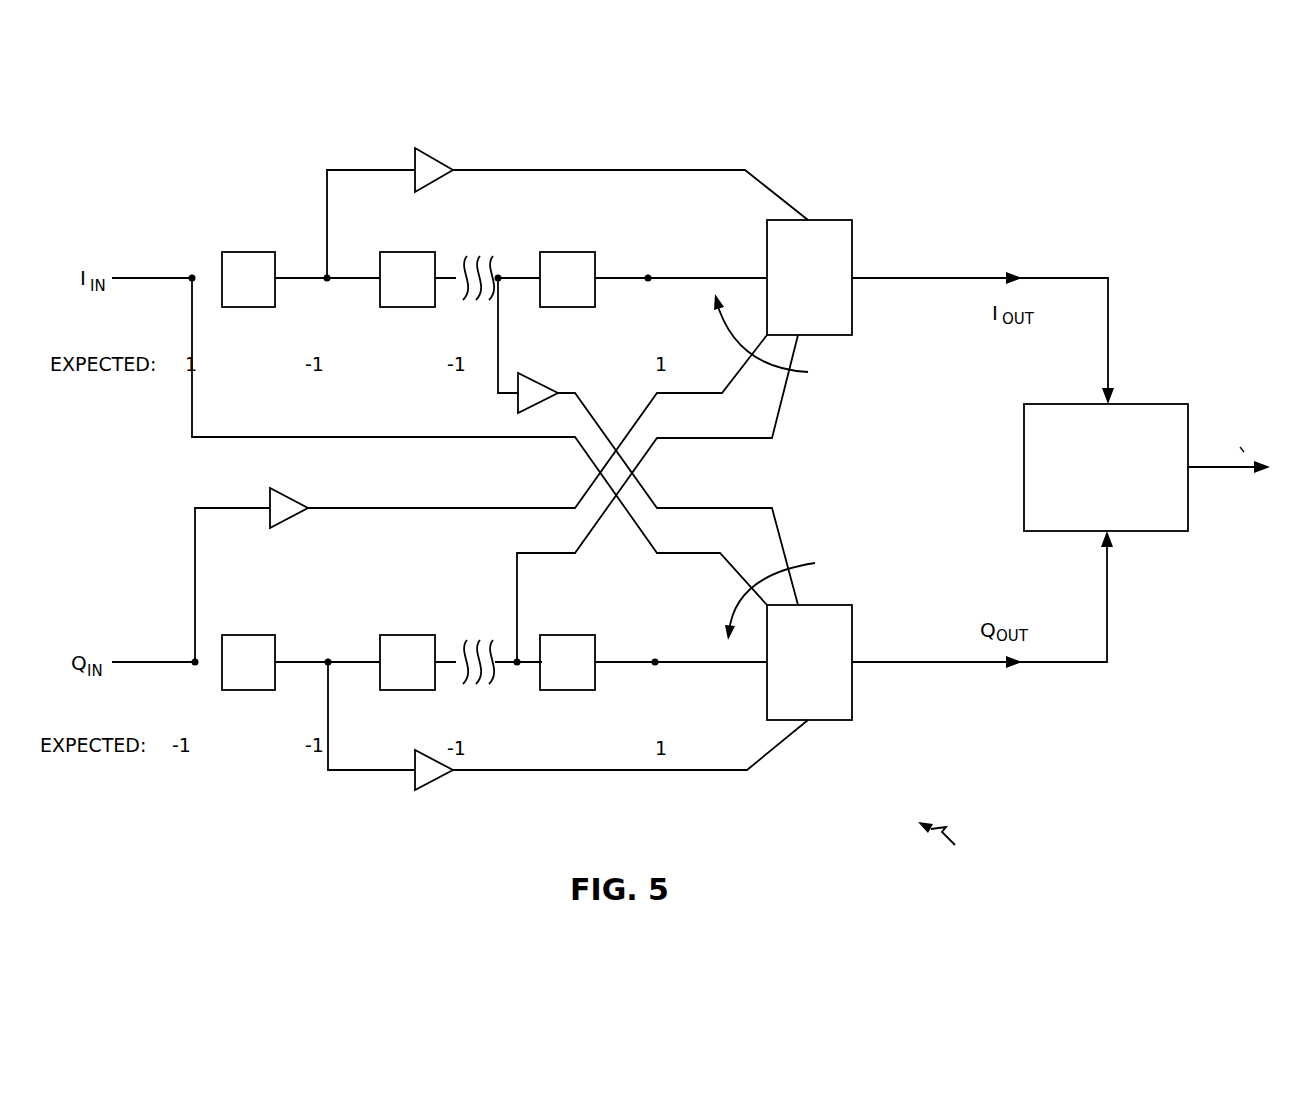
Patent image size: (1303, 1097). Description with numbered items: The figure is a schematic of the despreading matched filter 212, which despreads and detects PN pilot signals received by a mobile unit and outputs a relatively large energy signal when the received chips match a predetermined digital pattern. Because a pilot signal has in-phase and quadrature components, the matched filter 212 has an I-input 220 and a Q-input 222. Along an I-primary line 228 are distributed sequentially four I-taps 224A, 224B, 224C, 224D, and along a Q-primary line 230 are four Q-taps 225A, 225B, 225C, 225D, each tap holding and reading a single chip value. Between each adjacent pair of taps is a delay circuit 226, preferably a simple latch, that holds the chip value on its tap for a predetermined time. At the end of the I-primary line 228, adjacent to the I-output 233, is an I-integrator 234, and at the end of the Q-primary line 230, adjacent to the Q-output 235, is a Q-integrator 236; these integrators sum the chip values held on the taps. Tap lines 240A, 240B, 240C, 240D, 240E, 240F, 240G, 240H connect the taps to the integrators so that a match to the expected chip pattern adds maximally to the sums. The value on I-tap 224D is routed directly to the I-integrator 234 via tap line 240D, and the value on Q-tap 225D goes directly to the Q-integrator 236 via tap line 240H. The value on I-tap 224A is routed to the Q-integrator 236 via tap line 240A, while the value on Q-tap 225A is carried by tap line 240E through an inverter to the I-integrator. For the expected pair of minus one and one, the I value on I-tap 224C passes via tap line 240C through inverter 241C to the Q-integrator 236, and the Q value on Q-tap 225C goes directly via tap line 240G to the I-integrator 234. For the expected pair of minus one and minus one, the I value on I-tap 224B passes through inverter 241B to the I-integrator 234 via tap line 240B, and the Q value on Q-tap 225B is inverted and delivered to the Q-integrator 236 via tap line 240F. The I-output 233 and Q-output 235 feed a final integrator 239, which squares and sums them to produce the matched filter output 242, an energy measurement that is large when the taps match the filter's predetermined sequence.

The despreading matched filter 212 is at (958, 847).
The I-input 220 is at (166, 283).
The Q-input 222 is at (118, 666).
The I-tap 224A is at (191, 270).
The I-tap 224B is at (325, 283).
The I-tap 224C is at (499, 275).
The I-tap 224D is at (646, 283).
The Q-tap 225A is at (193, 657).
The Q-tap 225B is at (343, 645).
The Q-tap 225C is at (519, 668).
The Q-tap 225D is at (654, 667).
The delay circuit 226 is at (229, 252).
The I-primary line 228 is at (808, 372).
The Q-primary line 230 is at (813, 563).
The I-output 233 is at (940, 278).
The I-integrator 234 is at (828, 220).
The Q-output 235 is at (937, 662).
The Q-integrator 236 is at (832, 720).
The final integrator 239 is at (1135, 404).
The tap line 240A is at (191, 423).
The tap line 240B is at (647, 170).
The tap line 240C is at (497, 392).
The tap line 240D is at (678, 278).
The tap line 240E is at (194, 536).
The tap line 240F is at (327, 729).
The tap line 240G is at (517, 589).
The tap line 240H is at (684, 662).
The inverter 241B is at (430, 150).
The inverter 241C is at (538, 384).
The matched filter output 242 is at (1213, 467).